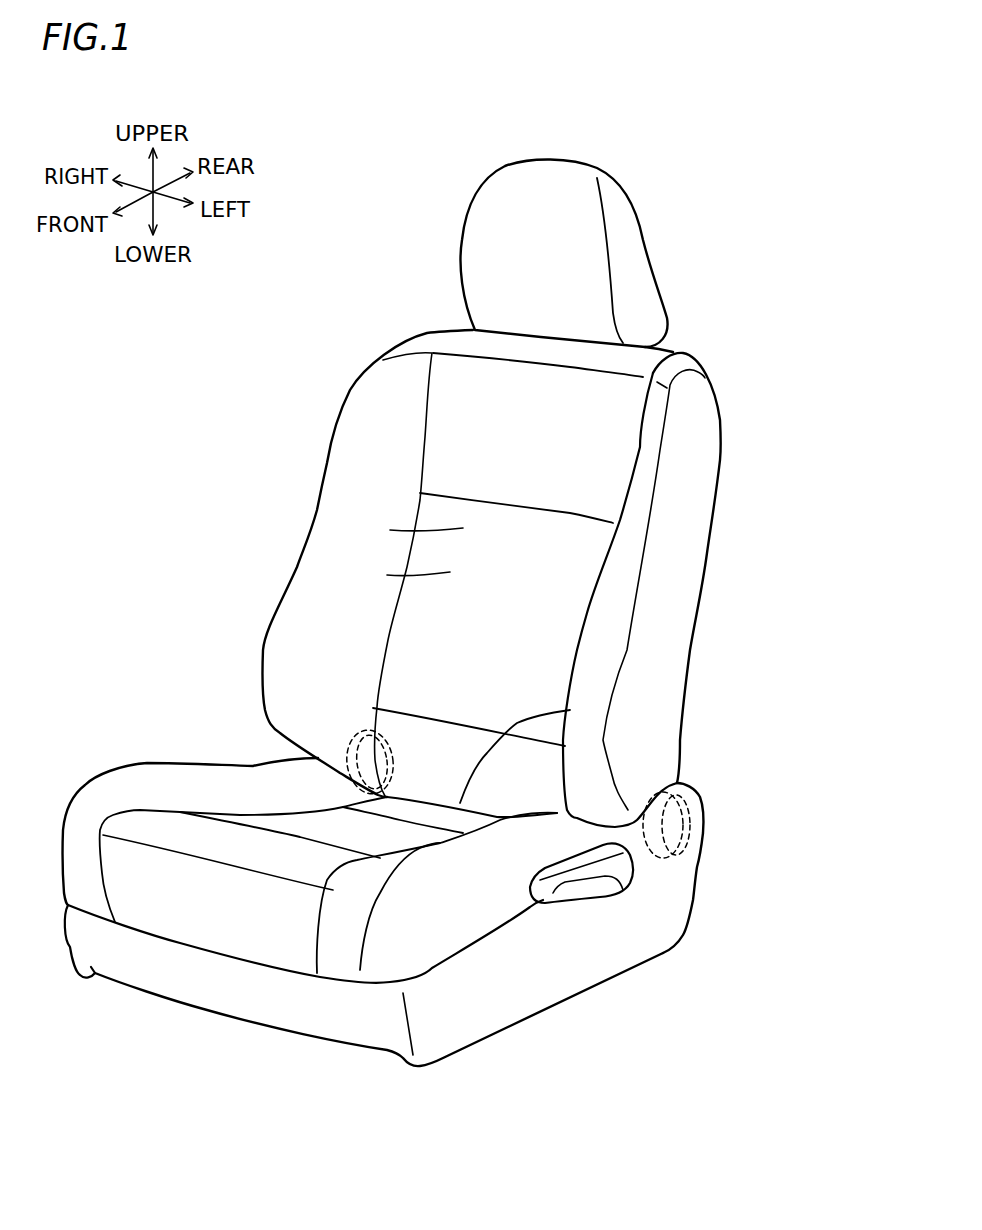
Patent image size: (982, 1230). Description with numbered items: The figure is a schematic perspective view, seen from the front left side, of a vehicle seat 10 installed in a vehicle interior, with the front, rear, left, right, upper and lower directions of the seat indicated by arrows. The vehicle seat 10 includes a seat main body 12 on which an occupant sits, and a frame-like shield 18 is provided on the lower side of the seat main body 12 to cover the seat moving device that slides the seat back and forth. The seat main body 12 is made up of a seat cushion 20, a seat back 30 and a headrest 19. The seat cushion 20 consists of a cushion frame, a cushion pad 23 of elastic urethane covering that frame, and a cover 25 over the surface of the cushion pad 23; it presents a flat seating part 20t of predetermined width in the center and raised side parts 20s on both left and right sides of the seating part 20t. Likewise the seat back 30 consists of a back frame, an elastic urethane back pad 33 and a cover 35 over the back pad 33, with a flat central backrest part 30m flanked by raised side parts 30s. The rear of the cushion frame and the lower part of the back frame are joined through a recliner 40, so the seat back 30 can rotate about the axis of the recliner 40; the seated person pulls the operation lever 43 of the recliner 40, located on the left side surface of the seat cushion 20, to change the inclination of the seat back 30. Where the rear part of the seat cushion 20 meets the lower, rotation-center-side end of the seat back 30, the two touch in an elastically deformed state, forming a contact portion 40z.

The vehicle seat 10 is at (733, 373).
The seat main body 12 is at (722, 458).
The shield 18 is at (303, 1006).
The headrest 19 is at (548, 223).
The seat cushion 20 is at (383, 913).
The side parts 20s is at (180, 782).
The seating part 20t is at (357, 835).
The cover 25 is at (323, 827).
The cushion pad 23 is at (321, 780).
The seat back 30 is at (368, 452).
The backrest part 30m is at (387, 575).
The side parts 30s is at (320, 607).
The cover 35 is at (390, 530).
The back pad 33 is at (323, 508).
The recliner 40 is at (347, 745).
The contact portion 40z is at (570, 710).
The operation lever 43 is at (583, 883).